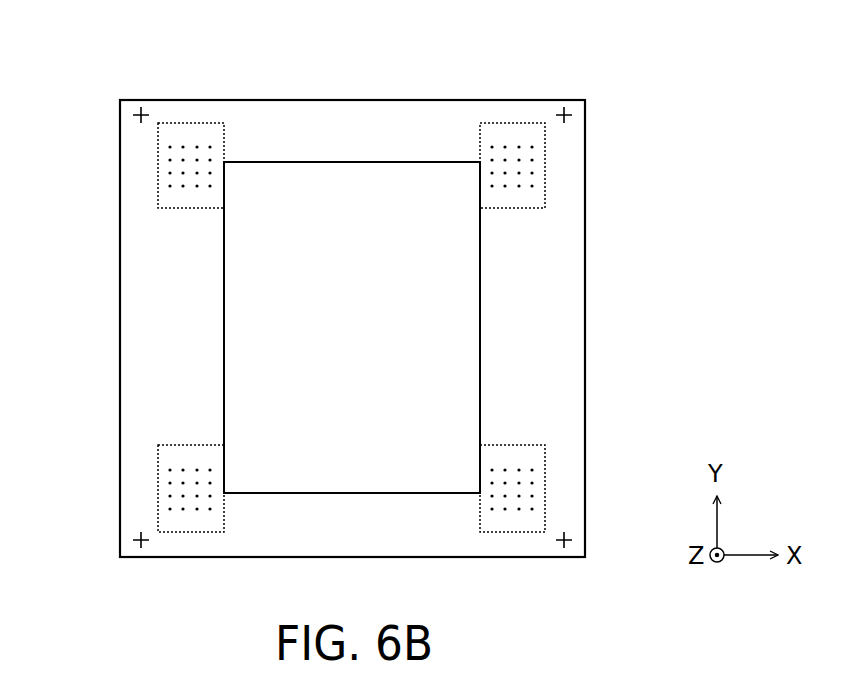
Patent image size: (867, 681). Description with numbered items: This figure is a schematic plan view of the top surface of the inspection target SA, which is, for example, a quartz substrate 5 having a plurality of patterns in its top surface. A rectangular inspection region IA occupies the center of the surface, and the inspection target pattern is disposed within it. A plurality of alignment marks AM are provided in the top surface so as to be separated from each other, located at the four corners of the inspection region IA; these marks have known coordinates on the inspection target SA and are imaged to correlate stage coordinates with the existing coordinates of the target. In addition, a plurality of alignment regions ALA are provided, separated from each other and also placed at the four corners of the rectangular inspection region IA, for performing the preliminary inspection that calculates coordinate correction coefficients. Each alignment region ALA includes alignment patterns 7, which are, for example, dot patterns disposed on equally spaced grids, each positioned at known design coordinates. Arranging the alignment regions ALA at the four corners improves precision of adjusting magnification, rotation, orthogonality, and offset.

The quartz substrate 5 is at (388, 95).
The inspection target SA is at (622, 78).
The inspection region IA is at (320, 152).
The alignment region ALA is at (185, 120).
The alignment pattern 7 is at (200, 140).
The alignment mark AM is at (140, 124).